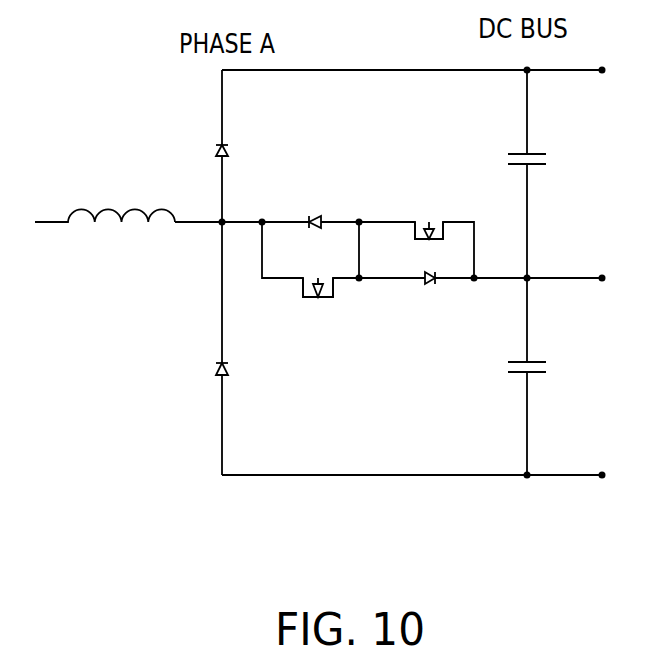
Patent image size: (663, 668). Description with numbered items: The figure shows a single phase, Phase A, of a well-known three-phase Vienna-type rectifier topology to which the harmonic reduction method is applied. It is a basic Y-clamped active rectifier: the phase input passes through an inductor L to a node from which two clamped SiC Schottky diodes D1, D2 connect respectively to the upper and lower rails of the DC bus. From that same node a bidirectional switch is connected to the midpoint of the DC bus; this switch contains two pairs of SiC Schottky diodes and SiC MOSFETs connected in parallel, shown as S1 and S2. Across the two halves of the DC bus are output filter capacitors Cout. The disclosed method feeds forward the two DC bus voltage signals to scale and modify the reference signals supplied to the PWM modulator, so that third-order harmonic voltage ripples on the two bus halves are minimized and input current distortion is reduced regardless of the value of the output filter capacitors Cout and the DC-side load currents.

The inductor L is at (105, 197).
The clamped SiC Schottky diode D1 is at (244, 155).
The clamped SiC Schottky diode D2 is at (244, 370).
The bidirectional switch pair S1 is at (432, 211).
The bidirectional switch pair S2 is at (318, 309).
The output filter capacitor Cout is at (569, 266).